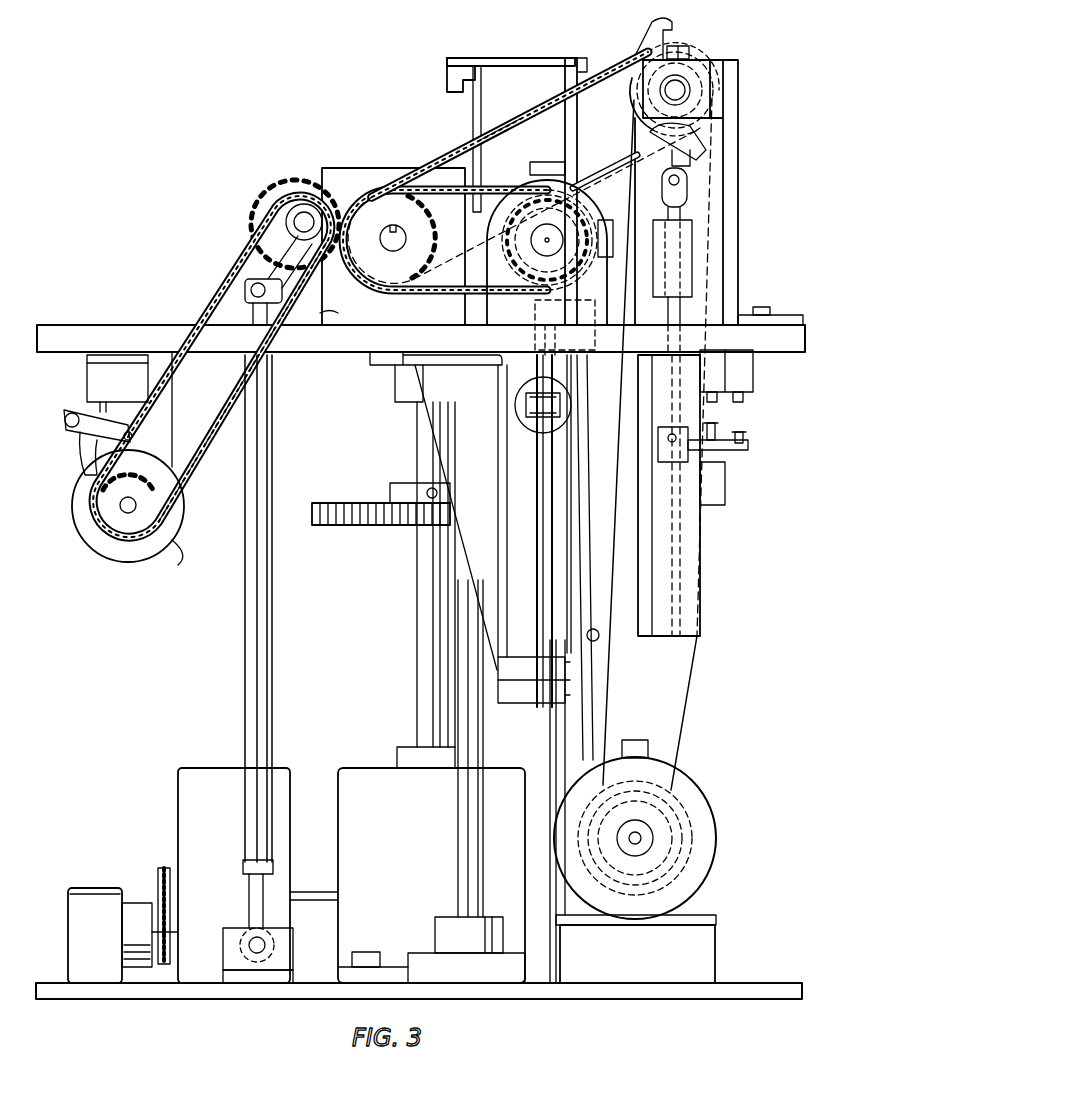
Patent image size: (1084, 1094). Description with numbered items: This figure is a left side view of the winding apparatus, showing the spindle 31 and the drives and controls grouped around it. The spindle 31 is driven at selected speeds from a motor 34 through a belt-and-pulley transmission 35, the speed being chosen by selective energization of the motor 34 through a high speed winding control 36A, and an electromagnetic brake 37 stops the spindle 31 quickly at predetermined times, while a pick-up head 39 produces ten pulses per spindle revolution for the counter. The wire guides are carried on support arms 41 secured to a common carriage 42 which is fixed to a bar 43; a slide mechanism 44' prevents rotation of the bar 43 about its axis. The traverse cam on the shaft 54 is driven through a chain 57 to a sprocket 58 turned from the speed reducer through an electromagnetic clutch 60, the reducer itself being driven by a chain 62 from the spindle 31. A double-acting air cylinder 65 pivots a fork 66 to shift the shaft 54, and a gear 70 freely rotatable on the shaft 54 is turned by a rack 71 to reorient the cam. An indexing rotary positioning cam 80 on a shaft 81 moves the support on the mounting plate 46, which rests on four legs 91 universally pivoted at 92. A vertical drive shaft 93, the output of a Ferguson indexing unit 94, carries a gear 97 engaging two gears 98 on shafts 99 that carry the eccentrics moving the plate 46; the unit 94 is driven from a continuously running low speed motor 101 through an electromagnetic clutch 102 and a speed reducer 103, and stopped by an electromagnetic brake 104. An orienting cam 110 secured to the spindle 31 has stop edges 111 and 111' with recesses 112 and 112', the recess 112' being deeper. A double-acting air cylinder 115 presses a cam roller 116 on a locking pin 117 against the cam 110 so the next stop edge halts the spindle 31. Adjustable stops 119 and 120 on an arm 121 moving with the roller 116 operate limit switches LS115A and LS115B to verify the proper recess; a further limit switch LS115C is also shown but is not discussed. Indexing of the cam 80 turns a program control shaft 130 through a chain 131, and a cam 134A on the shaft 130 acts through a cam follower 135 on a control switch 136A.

The spindle 31 is at (680, 90).
The motor 34 is at (700, 800).
The belt-and-pulley transmission 35 is at (683, 693).
The high speed winding control 36A is at (646, 722).
The electromagnetic brake 37 is at (688, 838).
The pick-up head 39 is at (723, 62).
The support arms 41 is at (605, 62).
The carriage 42 is at (577, 144).
The bar 43 is at (543, 164).
The slide mechanism 44' is at (437, 89).
The mounting plate 46 is at (344, 314).
The shaft 54 is at (535, 248).
The chain 57 is at (490, 188).
The sprocket 58 is at (370, 222).
The electromagnetic clutch 60 is at (392, 153).
The chain 62 is at (505, 126).
The double-acting air cylinder 65 is at (516, 415).
The fork 66 is at (542, 455).
The gear 70 is at (535, 307).
The rack 71 is at (545, 337).
The indexing rotary positioning cam 80 is at (270, 205).
The shaft 81 is at (304, 220).
The legs 91 is at (245, 587).
The universal pivots 92 is at (252, 270).
The vertical drive shaft 93 is at (430, 605).
The Ferguson indexing unit 94 is at (352, 776).
The gear 97 is at (326, 503).
The gears 98 is at (432, 532).
The shafts 99 is at (460, 828).
The low speed motor 101 is at (88, 896).
The electromagnetic clutch 102 is at (130, 904).
The speed reducer 103 is at (198, 776).
The electromagnetic brake 104 is at (155, 905).
The orienting cam 110 is at (522, 167).
The stop edge 111 is at (737, 157).
The stop edge 111' is at (635, 35).
The recess 112 is at (726, 138).
The recess 112' is at (643, 46).
The double-acting air cylinder 115 is at (700, 572).
The cam roller 116 is at (688, 186).
The locking pin 117 is at (690, 205).
The adjustable stop 119 is at (715, 425).
The adjustable stop 120 is at (746, 434).
The arm 121 is at (730, 448).
The program control shaft 130 is at (92, 504).
The chain 131 is at (208, 310).
The cam 134A is at (130, 562).
The cam followers 135 is at (168, 420).
The control switch 136A is at (112, 380).
The limit switch LS115A is at (712, 357).
The limit switch LS115B is at (740, 380).
The limit switch LS115C is at (726, 490).